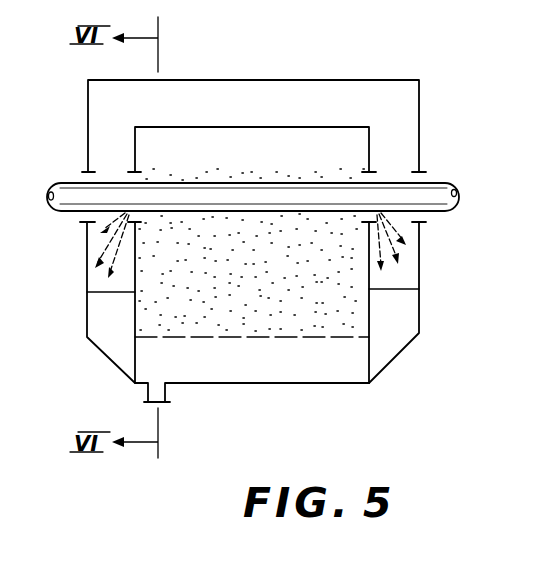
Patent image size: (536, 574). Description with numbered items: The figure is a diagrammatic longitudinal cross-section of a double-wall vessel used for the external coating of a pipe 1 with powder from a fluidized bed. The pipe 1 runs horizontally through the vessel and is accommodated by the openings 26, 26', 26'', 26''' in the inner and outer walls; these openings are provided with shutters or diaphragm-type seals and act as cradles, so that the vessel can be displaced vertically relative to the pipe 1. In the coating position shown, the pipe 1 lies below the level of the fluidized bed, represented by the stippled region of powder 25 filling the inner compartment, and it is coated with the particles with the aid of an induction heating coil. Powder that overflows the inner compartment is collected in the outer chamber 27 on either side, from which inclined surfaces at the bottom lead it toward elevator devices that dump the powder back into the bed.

The pipe 1 is at (433, 193).
The bed of granular material 25 is at (218, 327).
The opening 26 is at (233, 126).
The opening 26' is at (236, 148).
The opening 26'' is at (387, 256).
The opening 26''' is at (438, 302).
The outer chamber 27 is at (95, 245).